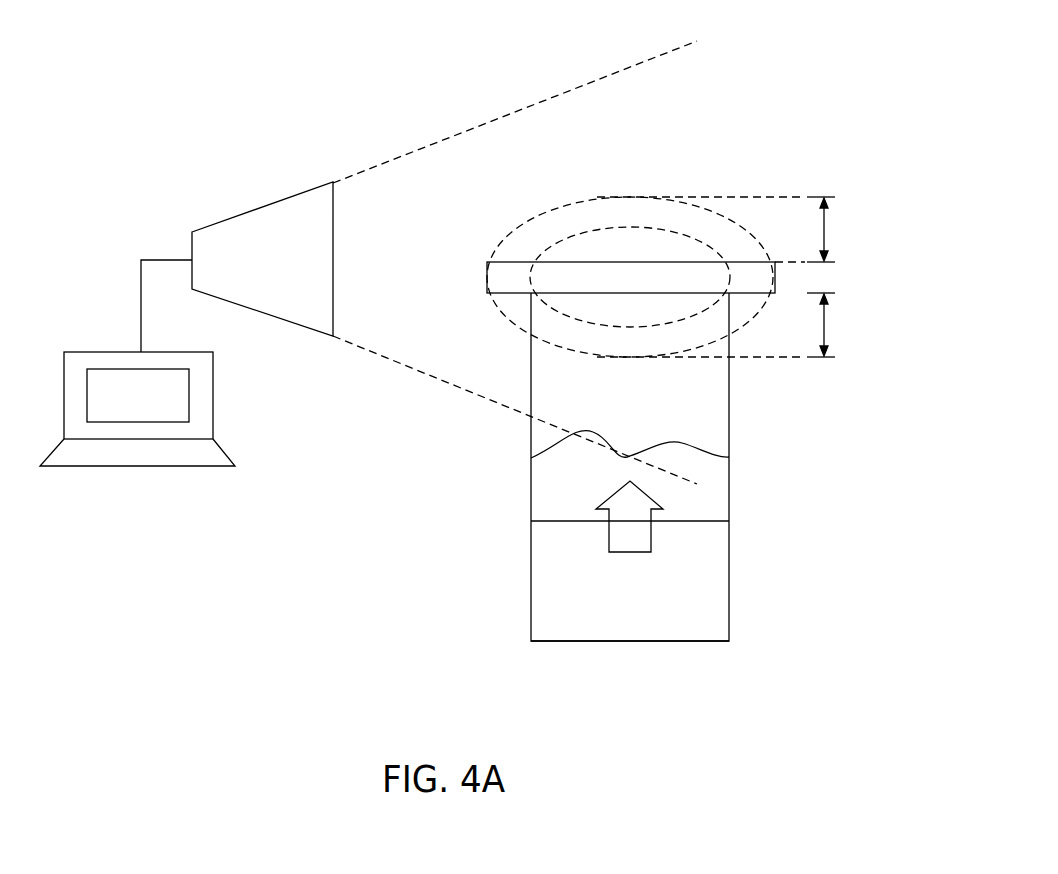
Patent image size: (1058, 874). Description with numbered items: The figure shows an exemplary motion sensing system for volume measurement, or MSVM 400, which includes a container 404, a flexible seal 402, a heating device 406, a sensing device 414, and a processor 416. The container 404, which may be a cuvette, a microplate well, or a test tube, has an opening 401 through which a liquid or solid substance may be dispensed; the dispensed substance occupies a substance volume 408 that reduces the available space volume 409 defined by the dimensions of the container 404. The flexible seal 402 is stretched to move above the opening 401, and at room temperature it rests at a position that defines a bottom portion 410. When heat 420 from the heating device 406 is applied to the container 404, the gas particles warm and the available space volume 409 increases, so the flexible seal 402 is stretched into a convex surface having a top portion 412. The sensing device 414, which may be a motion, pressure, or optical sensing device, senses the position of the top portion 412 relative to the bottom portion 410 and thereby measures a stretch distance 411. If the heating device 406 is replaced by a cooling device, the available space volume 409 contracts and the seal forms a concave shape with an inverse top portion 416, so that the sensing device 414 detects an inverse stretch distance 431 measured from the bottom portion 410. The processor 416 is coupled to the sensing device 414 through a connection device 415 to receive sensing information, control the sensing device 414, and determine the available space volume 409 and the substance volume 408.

The motion sensing system for volume measurement 400 is at (355, 597).
The opening 401 is at (625, 307).
The flexible seal 402 is at (503, 276).
The container 404 is at (731, 436).
The heating device 406 is at (731, 642).
The substance volume 408 is at (543, 488).
The available space volume 409 is at (543, 400).
The bottom portion 410 is at (585, 259).
The stretch distance 411 is at (825, 230).
The top portion 412 is at (624, 195).
The sensing device 414 is at (254, 227).
The connection device 415 is at (141, 306).
The processor 416 is at (203, 395).
The heat 420 is at (609, 536).
The inverse stretch distance 431 is at (825, 325).